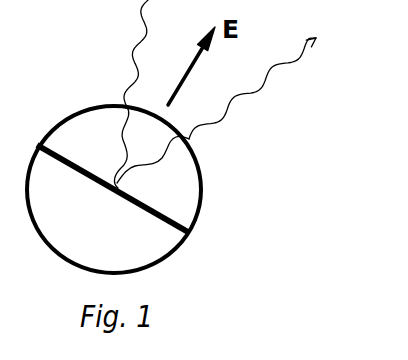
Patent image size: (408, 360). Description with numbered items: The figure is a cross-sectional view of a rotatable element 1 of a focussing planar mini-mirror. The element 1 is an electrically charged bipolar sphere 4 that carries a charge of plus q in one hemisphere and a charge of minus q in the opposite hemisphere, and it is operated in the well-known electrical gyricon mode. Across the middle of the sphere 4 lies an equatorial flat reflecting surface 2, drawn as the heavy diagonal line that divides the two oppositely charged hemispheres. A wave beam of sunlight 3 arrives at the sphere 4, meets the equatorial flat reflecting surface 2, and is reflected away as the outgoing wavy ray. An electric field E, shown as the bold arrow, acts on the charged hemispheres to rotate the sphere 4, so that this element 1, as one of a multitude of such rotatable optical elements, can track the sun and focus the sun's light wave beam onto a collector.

The rotatable element 1 is at (145, 136).
The equatorial flat reflecting surface 2 is at (83, 178).
The wave beam of sunlight 3 is at (138, 20).
The electrically charged bipolar sphere 4 is at (187, 190).